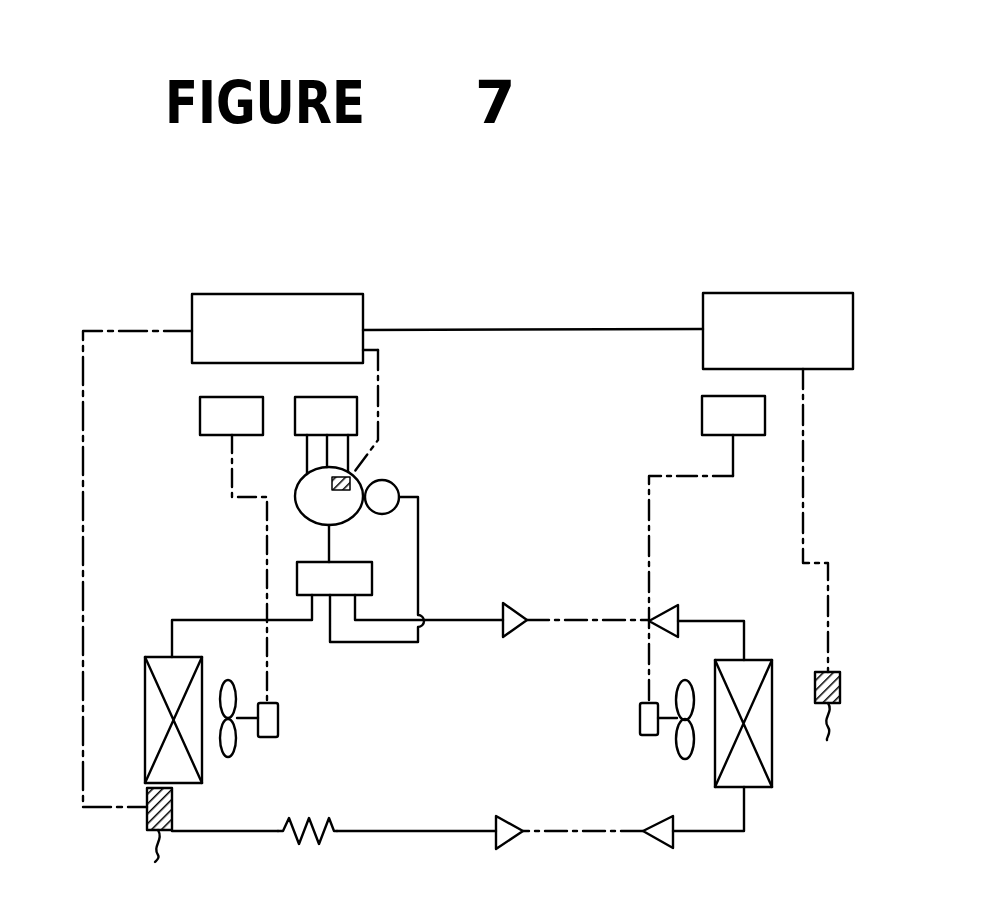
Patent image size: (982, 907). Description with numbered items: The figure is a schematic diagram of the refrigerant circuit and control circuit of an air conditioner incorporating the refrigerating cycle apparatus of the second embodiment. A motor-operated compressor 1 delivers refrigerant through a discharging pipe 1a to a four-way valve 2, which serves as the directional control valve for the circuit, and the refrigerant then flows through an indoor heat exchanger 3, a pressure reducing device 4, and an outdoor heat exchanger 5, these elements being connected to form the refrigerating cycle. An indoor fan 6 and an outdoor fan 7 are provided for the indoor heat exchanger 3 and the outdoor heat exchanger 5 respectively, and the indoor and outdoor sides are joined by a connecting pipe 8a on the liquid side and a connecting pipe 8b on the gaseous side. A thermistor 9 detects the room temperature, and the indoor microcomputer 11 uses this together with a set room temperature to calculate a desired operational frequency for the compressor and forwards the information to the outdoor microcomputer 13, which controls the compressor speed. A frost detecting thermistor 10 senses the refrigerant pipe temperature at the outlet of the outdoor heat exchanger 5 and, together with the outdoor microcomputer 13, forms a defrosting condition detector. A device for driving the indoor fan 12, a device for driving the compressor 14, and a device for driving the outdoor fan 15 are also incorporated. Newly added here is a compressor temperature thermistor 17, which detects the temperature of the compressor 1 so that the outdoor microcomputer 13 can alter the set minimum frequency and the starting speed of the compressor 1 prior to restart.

The motor-operated compressor 1 is at (296, 505).
The discharging pipe 1a is at (331, 540).
The four-way valve 2 is at (372, 585).
The indoor heat exchanger 3 is at (772, 682).
The pressure reducing device 4 is at (300, 843).
The outdoor heat exchanger 5 is at (145, 703).
The indoor fan 6 is at (640, 718).
The outdoor fan 7 is at (278, 718).
The connecting pipe 8a is at (584, 818).
The connecting pipe 8b is at (590, 606).
The thermistor 9 is at (840, 690).
The frost detecting thermistor 10 is at (147, 822).
The indoor microcomputer 11 is at (815, 293).
The device for driving the indoor fan 12 is at (702, 415).
The outdoor microcomputer 13 is at (350, 294).
The device for driving the compressor 14 is at (357, 408).
The device for driving the outdoor fan 15 is at (200, 420).
The compressor temperature thermistor 17 is at (352, 475).